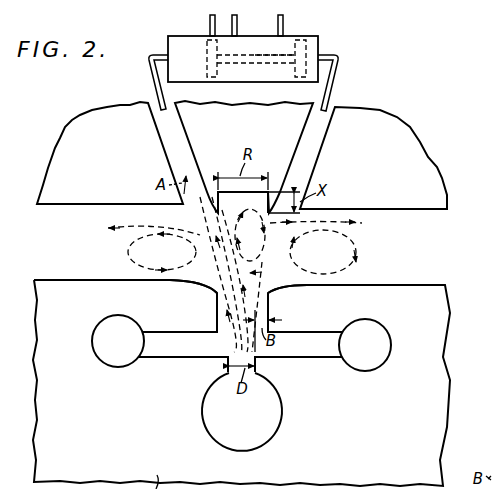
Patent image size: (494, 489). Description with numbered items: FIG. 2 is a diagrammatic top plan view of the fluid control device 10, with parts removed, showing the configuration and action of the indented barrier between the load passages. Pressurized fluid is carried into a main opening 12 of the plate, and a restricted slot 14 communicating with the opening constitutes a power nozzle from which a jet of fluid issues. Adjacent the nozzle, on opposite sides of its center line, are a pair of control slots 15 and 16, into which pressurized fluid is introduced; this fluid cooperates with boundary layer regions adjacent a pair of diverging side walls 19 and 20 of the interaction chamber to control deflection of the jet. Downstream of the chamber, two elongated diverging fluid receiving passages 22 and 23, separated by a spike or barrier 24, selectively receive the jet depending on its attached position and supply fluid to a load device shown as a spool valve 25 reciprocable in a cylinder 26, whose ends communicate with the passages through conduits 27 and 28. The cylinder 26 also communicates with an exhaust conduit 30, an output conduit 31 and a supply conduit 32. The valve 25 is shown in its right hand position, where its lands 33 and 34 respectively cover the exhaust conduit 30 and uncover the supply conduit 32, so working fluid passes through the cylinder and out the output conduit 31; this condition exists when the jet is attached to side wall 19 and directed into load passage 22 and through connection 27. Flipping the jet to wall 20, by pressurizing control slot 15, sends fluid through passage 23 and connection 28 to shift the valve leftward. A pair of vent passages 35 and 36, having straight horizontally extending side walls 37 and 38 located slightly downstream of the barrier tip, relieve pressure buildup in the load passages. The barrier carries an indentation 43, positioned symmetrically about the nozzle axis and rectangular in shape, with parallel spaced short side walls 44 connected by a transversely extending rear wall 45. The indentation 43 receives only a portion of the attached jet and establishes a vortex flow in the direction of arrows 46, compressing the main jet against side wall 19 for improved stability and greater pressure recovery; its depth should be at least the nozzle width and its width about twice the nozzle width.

The mold block 10 is at (461, 324).
The main opening 12 is at (271, 420).
The restricted slot 14 is at (240, 355).
The control slot 15 is at (112, 358).
The control slot 16 is at (375, 358).
The diverging side wall 19 is at (211, 285).
The diverging side wall 20 is at (274, 284).
The fluid receiving passage 22 is at (167, 138).
The fluid receiving passage 23 is at (314, 140).
The barrier 24 is at (201, 118).
The spool valve 25 is at (267, 64).
The cylinder 26 is at (168, 47).
The conduit 27 is at (156, 94).
The conduit 28 is at (332, 84).
The exhaust conduit 30 is at (210, 22).
The output conduit 31 is at (237, 22).
The supply conduit 32 is at (283, 22).
The land 33 is at (207, 56).
The land 34 is at (306, 49).
The vent passage 35 is at (62, 247).
The vent passage 36 is at (433, 249).
The side wall 37 is at (76, 204).
The side wall 38 is at (410, 209).
The indentation 43 is at (250, 241).
The short side wall 44 is at (217, 194).
The rear wall 45 is at (270, 192).
The arrows 46 is at (287, 243).